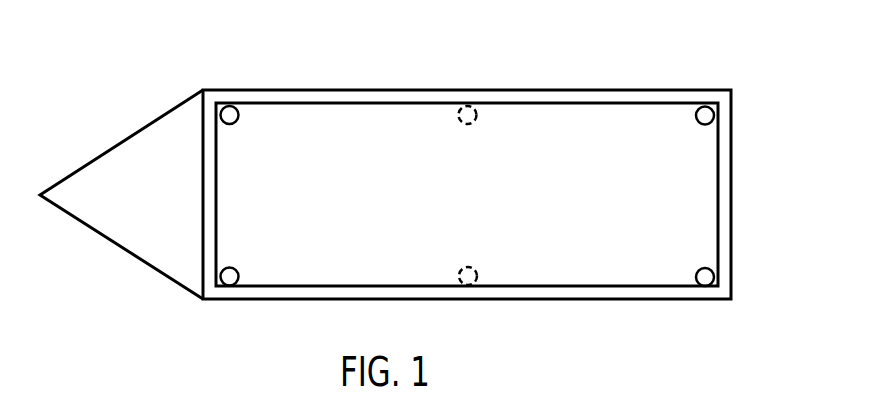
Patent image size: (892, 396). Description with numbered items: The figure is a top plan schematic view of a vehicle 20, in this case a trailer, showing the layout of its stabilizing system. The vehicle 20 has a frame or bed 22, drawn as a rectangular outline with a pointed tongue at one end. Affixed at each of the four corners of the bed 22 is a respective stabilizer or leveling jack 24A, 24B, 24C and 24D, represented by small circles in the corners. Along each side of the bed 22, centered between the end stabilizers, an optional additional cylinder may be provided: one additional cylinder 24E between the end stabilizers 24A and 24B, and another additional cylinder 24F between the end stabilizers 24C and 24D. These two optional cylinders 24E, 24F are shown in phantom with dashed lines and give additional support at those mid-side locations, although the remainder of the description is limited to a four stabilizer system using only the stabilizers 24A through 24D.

The vehicle 20 is at (592, 53).
The frame or bed 22 is at (468, 89).
The stabilizer or leveling jack 24A is at (238, 117).
The stabilizer or leveling jack 24B is at (696, 118).
The stabilizer or leveling jack 24C is at (239, 274).
The stabilizer or leveling jack 24D is at (696, 274).
The additional cylinder 24E is at (458, 118).
The additional cylinder 24F is at (459, 274).